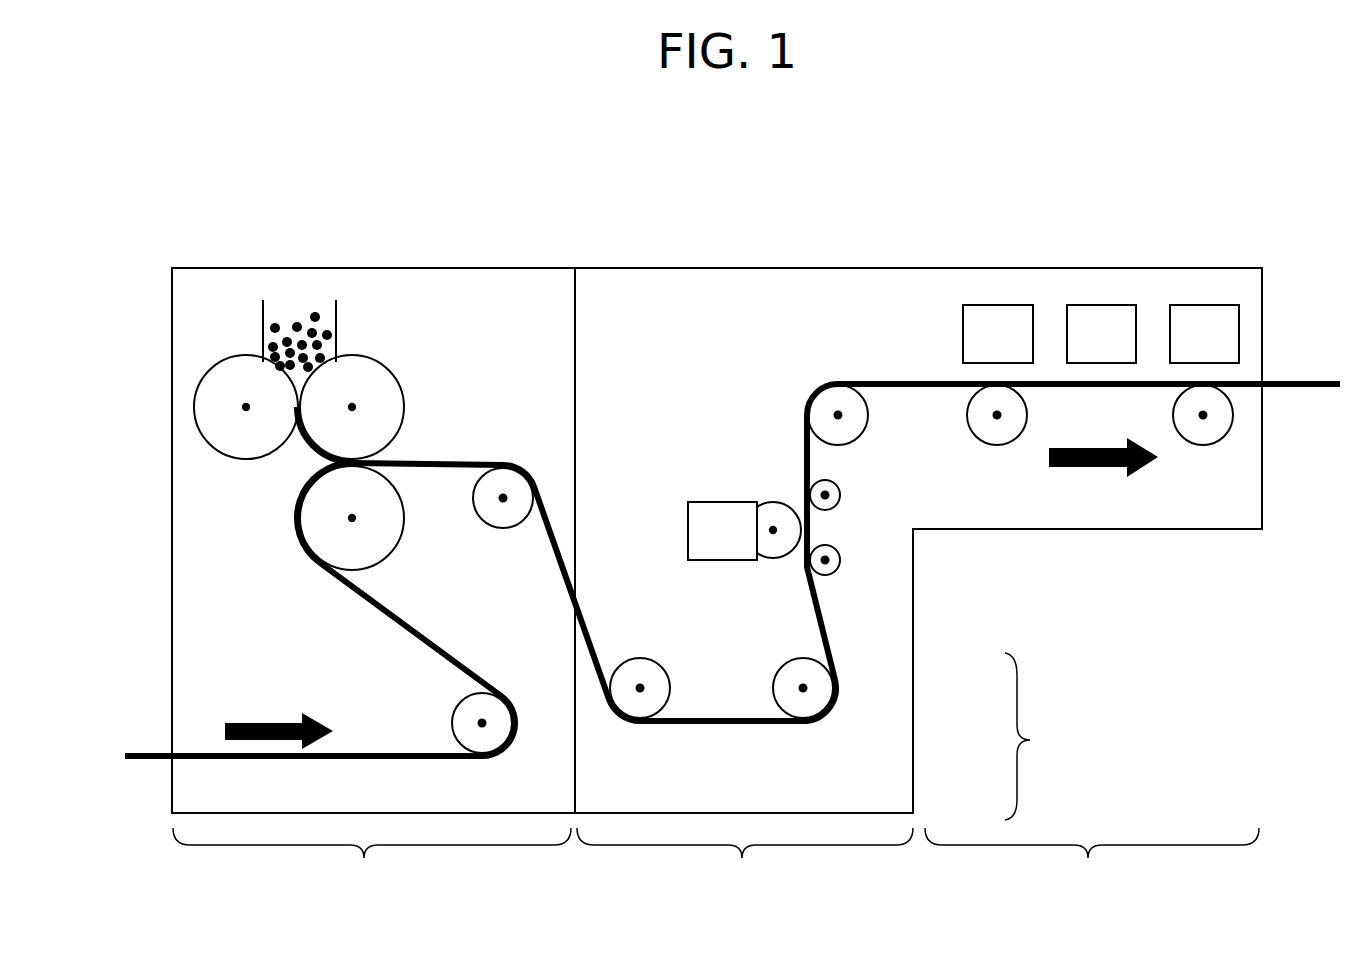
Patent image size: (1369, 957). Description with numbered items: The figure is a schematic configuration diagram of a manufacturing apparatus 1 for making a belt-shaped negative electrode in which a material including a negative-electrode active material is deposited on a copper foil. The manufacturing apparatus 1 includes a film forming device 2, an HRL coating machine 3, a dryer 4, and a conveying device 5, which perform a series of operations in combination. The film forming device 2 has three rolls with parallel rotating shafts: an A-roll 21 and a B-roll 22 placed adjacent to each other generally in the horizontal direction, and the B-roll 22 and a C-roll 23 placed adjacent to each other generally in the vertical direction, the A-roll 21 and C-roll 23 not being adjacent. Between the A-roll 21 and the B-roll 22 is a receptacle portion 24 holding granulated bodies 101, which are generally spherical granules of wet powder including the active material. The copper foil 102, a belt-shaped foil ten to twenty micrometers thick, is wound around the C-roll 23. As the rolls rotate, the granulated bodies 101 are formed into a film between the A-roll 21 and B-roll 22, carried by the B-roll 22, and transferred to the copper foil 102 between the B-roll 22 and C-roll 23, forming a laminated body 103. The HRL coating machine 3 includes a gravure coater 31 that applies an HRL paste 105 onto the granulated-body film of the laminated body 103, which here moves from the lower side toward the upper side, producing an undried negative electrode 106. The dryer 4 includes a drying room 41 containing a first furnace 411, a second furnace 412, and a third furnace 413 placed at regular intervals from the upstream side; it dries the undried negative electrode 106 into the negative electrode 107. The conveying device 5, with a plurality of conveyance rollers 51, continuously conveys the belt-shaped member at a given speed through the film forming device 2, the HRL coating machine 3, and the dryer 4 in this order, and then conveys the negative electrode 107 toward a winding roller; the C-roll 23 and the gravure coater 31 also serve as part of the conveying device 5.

The manufacturing apparatus 1 is at (842, 196).
The film forming device 2 is at (372, 864).
The HRL coating machine 3 is at (745, 864).
The dryer 4 is at (1092, 864).
The conveying device 5 is at (1029, 736).
The A-roll 21 is at (222, 360).
The B-roll 22 is at (403, 394).
The C-roll 23 is at (385, 549).
The receptacle portion 24 is at (337, 322).
The gravure coater 31 is at (772, 502).
The drying room 41 is at (1225, 528).
The conveyance rollers 51 is at (1203, 445).
The granulated bodies 101 is at (290, 320).
The copper foil 102 is at (198, 755).
The laminated body 103 is at (434, 460).
The HRL paste 105 is at (720, 550).
The undried negative electrode 106 is at (878, 381).
The negative electrode 107 is at (1322, 381).
The first furnace 411 is at (990, 305).
The second furnace 412 is at (1101, 305).
The third furnace 413 is at (1199, 305).